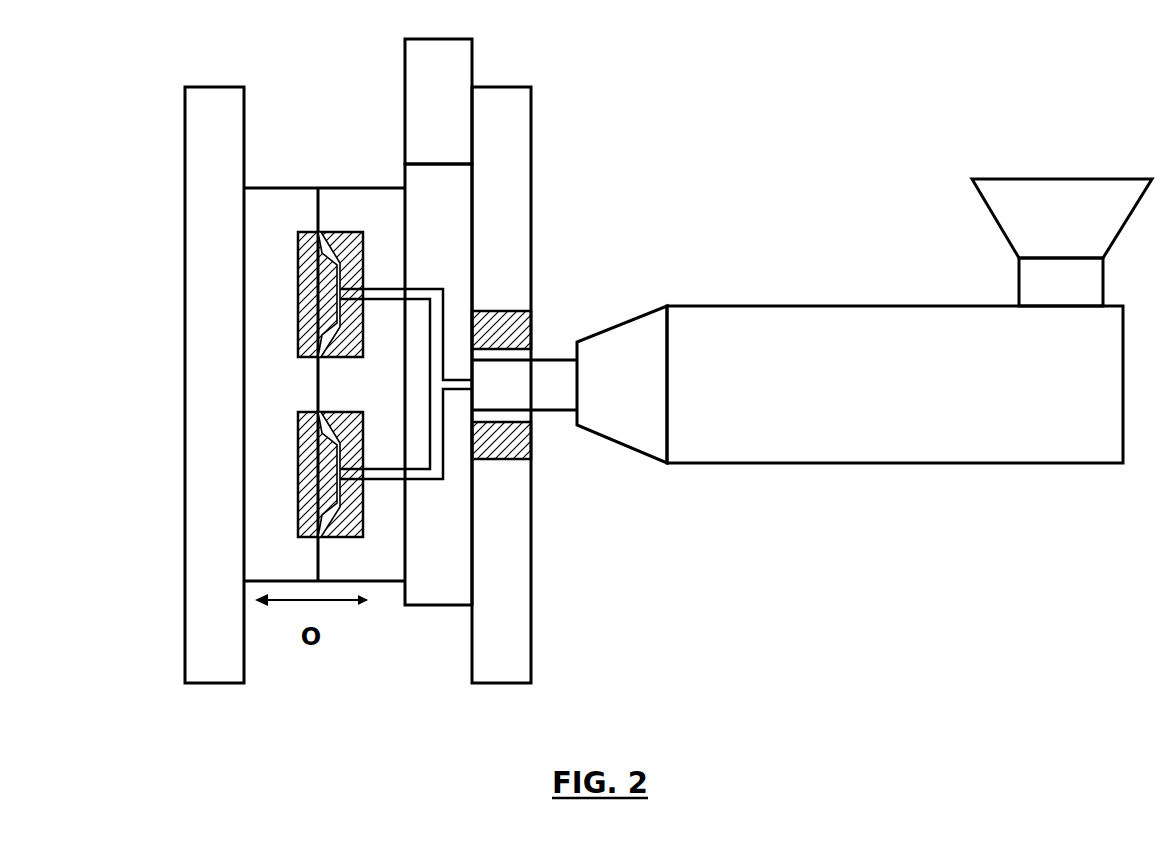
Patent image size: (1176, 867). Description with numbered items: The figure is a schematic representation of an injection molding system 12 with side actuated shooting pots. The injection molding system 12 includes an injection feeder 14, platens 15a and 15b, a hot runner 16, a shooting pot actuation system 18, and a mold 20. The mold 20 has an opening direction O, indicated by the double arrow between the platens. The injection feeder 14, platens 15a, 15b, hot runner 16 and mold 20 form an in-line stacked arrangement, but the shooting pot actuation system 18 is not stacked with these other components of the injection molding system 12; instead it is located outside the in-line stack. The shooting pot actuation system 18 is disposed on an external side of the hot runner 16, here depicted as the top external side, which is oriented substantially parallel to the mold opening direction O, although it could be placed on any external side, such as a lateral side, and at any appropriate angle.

The injection molding system 12 is at (864, 273).
The injection feeder 14 is at (777, 325).
The platen 15a is at (518, 145).
The platen 15b is at (208, 155).
The hot runner 16 is at (432, 585).
The shooting pot actuation system 18 is at (455, 63).
The mold 20 is at (327, 155).